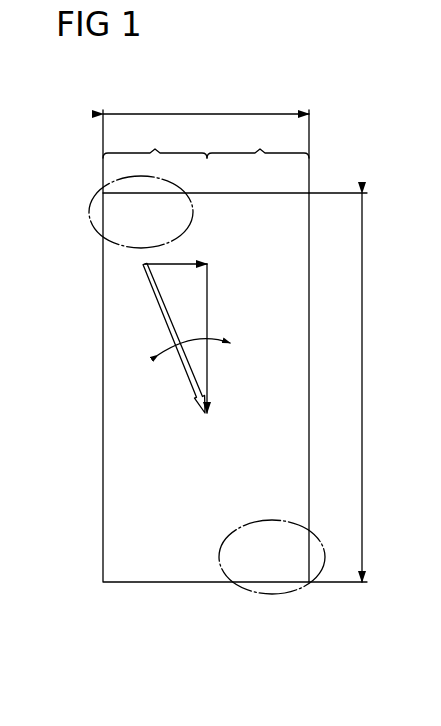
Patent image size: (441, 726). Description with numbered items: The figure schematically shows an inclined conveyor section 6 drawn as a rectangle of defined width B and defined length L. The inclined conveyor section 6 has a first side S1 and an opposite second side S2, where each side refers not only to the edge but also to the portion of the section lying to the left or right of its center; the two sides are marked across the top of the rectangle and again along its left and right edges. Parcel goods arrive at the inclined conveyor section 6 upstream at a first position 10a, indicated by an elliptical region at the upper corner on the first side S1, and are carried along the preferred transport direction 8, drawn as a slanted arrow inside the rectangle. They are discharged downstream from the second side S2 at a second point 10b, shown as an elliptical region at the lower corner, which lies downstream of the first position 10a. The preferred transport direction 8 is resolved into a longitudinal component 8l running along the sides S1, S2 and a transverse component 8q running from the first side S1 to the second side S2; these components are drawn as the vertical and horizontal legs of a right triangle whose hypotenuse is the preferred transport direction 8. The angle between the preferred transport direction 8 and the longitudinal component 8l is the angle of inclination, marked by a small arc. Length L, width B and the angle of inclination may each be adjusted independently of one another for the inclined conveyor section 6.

The inclined conveyor section 6 is at (100, 190).
The first position 10a is at (97, 232).
The second point 10b is at (295, 588).
The preferred transport direction 8 is at (162, 310).
The transverse component 8q is at (193, 260).
The longitudinal component 8l is at (208, 307).
The first side S1 is at (102, 410).
The second side S2 is at (311, 355).
The width B is at (207, 114).
The length L is at (363, 388).